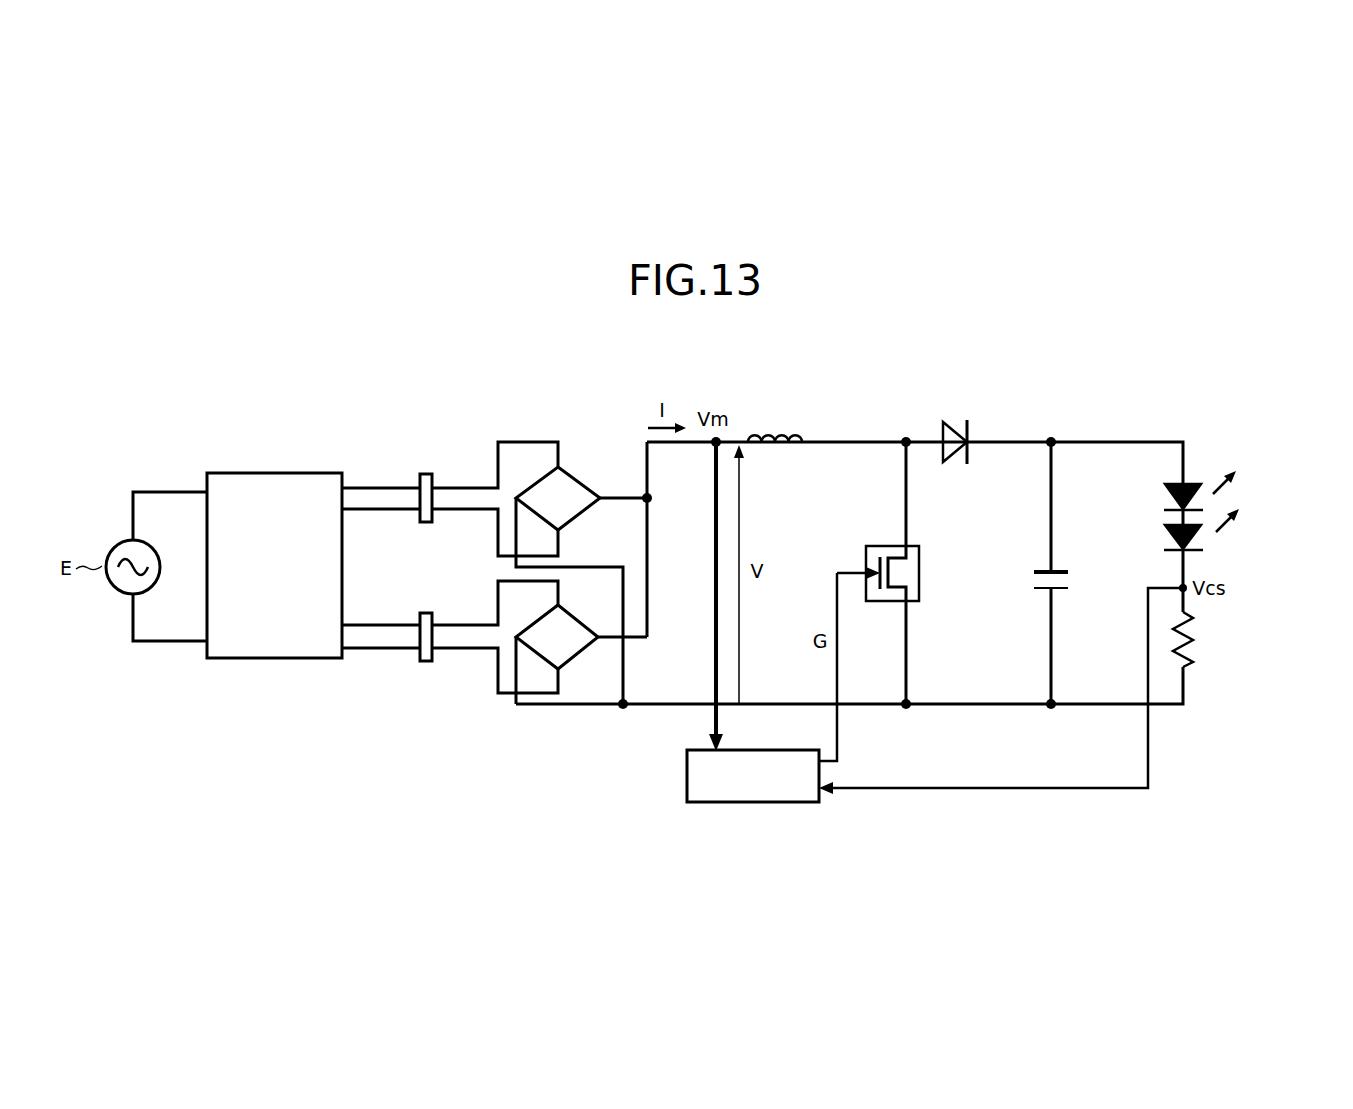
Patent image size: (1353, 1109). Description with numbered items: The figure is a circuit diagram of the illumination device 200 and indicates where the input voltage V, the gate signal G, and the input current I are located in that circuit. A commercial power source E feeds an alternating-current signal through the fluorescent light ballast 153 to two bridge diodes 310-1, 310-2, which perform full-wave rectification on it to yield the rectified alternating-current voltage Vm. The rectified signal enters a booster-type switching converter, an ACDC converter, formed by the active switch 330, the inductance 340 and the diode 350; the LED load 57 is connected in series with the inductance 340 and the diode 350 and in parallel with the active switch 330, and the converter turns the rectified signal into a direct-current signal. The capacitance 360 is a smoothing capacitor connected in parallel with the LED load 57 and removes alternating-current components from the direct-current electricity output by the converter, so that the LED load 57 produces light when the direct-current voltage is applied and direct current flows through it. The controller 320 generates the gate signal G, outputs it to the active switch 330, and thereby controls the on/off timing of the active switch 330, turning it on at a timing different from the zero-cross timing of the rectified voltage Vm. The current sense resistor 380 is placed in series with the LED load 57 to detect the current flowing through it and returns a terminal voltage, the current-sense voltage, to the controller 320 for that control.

The fluorescent light ballast 153 is at (304, 473).
The bridge diode 310-1 is at (579, 470).
The bridge diode 310-2 is at (575, 660).
The controller 320 is at (686, 778).
The active switch 330 is at (920, 549).
The inductance 340 is at (794, 431).
The diode 350 is at (968, 425).
The capacitance 360 is at (1060, 568).
The current sense resistor 380 is at (1195, 641).
The illumination device 200 is at (1236, 396).
The LED load 57 is at (1266, 475).